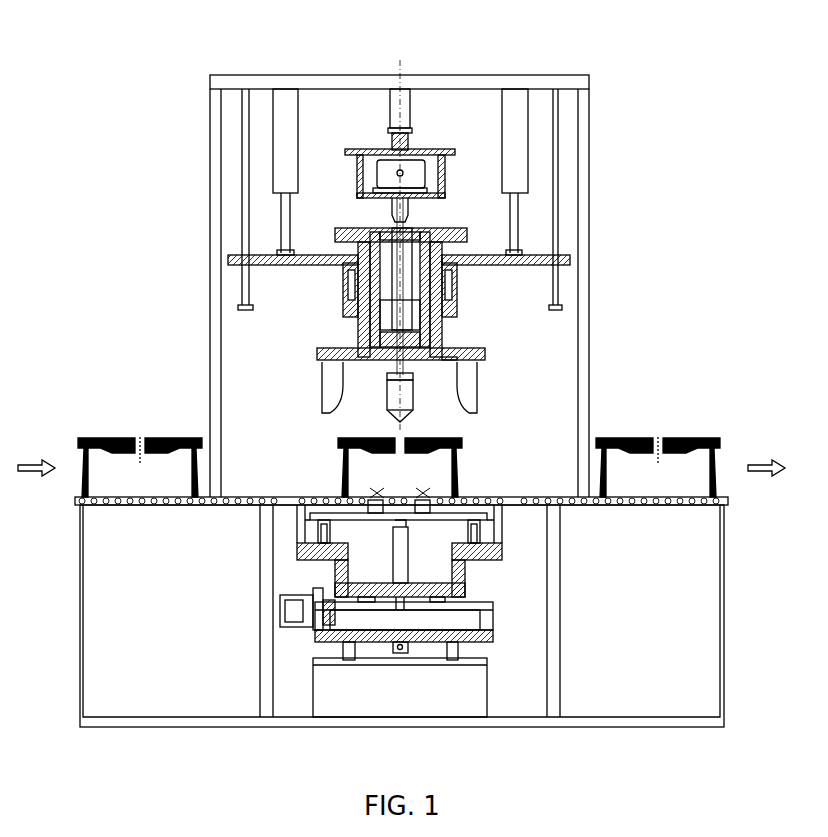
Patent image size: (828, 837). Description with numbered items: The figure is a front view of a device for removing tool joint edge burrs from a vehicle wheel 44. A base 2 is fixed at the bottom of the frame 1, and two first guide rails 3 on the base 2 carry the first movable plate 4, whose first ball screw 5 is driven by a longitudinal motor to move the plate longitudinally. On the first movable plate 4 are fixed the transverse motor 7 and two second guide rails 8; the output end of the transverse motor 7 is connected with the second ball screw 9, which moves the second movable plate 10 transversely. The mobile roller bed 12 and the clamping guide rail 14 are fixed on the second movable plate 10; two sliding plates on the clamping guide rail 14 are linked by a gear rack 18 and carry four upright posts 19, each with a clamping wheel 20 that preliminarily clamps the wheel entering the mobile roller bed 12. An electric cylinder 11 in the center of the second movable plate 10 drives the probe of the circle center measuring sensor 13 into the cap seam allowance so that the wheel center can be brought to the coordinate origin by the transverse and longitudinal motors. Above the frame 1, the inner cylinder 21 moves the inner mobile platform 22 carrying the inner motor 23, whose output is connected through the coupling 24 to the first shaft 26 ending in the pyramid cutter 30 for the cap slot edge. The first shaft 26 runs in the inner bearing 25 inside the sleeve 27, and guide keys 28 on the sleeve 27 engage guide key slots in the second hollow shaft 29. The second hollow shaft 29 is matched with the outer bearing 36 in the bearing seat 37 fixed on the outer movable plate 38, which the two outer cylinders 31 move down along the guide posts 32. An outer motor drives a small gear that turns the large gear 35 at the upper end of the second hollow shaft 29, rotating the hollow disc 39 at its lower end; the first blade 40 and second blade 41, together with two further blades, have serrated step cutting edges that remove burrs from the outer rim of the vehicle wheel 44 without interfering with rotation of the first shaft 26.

The frame 1 is at (267, 687).
The base 2 is at (323, 678).
The first guide rail 3 is at (337, 653).
The first movable plate 4 is at (495, 640).
The first ball screw 5 is at (308, 618).
The transverse motor 7 is at (318, 600).
The second guide rail 8 is at (483, 623).
The second ball screw 9 is at (467, 595).
The second movable plate 10 is at (503, 553).
The electric cylinder 11 is at (613, 437).
The mobile roller bed 12 is at (498, 530).
The circle center measuring sensor 13 is at (408, 560).
The clamping guide rail 14 is at (190, 440).
The gear rack 18 is at (262, 493).
The upright post 19 is at (285, 497).
The clamping wheel 20 is at (370, 497).
The inner cylinder 21 is at (410, 112).
The inner mobile platform 22 is at (415, 148).
The inner motor 23 is at (418, 173).
The coupling 24 is at (410, 205).
The inner bearing 25 is at (448, 225).
The first shaft 26 is at (430, 263).
The sleeve 27 is at (420, 282).
The guide key 28 is at (428, 298).
The second hollow shaft 29 is at (441, 318).
The pyramid cutter 30 is at (413, 387).
The outer cylinder 31 is at (245, 115).
The guide post 32 is at (285, 140).
The large gear 35 is at (347, 238).
The outer bearing 36 is at (362, 270).
The bearing seat 37 is at (373, 300).
The outer movable plate 38 is at (385, 322).
The hollow disc 39 is at (322, 387).
The first blade 40 is at (343, 460).
The second blade 41 is at (452, 367).
The vehicle wheel 44 is at (470, 522).